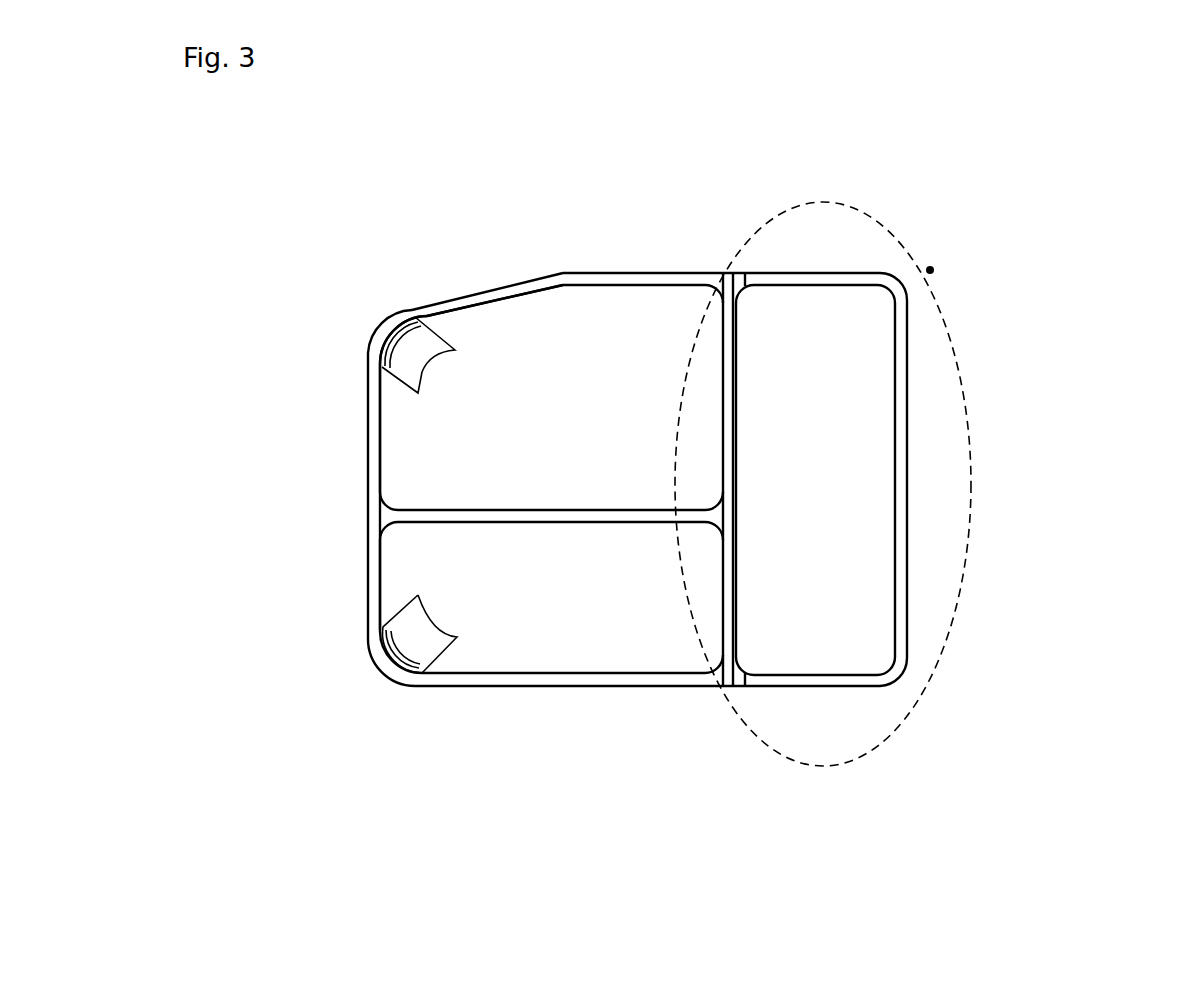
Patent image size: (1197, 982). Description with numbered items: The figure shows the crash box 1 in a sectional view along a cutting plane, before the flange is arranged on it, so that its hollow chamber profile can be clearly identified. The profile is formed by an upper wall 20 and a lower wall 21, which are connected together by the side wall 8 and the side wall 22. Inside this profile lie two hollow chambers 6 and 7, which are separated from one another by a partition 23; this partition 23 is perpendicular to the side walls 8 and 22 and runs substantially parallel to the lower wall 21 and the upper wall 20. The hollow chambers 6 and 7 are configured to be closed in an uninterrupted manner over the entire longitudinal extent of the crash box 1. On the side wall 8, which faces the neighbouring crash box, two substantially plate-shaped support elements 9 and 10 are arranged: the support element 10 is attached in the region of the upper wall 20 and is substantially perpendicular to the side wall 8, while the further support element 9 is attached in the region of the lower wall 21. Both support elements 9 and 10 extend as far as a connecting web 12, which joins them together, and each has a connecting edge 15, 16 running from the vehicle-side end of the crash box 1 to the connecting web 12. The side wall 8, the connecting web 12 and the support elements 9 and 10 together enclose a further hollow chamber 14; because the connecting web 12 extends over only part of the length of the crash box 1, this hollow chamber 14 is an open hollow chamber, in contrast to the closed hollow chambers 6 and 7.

The crash box 1 is at (558, 148).
The hollow chamber 6 is at (530, 440).
The hollow chamber 7 is at (448, 580).
The side wall 8 is at (735, 398).
The support element 9 is at (1030, 767).
The support element 10 is at (803, 280).
The connecting web 12 is at (900, 478).
The hollow chamber 14 is at (829, 342).
The connecting edge 15 is at (803, 280).
The connecting edge 16 is at (803, 679).
The upper wall 20 is at (527, 282).
The lower wall 21 is at (573, 682).
The side wall 22 is at (367, 459).
The partition 23 is at (517, 513).